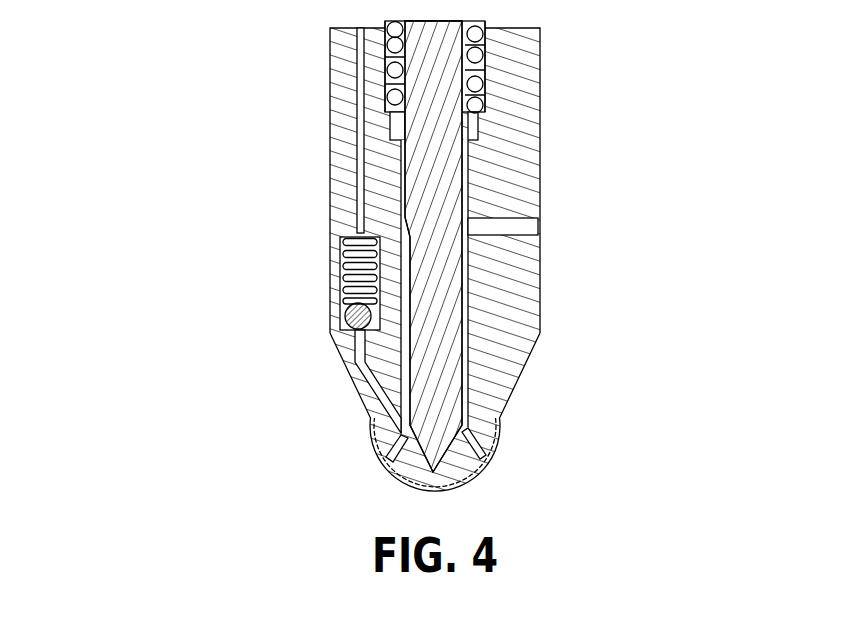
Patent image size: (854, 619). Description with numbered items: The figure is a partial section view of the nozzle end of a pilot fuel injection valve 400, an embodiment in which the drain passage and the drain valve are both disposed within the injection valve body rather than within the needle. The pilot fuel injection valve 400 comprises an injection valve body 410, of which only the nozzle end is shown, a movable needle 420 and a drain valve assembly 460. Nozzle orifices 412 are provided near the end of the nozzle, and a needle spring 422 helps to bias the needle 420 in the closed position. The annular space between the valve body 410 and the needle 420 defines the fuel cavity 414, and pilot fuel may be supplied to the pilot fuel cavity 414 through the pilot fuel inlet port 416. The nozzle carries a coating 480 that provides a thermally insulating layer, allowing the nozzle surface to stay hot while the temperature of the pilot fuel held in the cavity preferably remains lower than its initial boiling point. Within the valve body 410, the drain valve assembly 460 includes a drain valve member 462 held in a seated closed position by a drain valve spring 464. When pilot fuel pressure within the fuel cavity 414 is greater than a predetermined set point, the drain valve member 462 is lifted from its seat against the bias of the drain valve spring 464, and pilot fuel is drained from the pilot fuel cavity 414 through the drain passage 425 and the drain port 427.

The pilot fuel injection valve 400 is at (397, 249).
The injection valve body 410 is at (513, 157).
The nozzle orifices 412 is at (500, 425).
The fuel cavity 414 is at (467, 362).
The pilot fuel inlet port 416 is at (498, 228).
The movable needle 420 is at (442, 323).
The needle spring 422 is at (477, 55).
The drain passage 425 is at (358, 372).
The drain port 427 is at (358, 183).
The drain valve assembly 460 is at (294, 245).
The drain valve member 462 is at (350, 308).
The drain valve spring 464 is at (345, 280).
The coating 480 is at (366, 422).